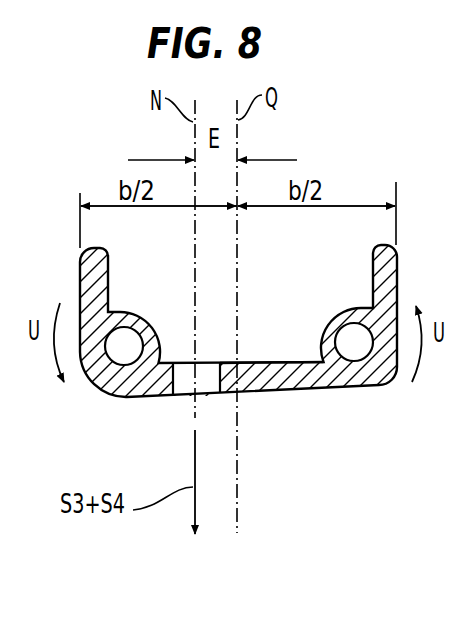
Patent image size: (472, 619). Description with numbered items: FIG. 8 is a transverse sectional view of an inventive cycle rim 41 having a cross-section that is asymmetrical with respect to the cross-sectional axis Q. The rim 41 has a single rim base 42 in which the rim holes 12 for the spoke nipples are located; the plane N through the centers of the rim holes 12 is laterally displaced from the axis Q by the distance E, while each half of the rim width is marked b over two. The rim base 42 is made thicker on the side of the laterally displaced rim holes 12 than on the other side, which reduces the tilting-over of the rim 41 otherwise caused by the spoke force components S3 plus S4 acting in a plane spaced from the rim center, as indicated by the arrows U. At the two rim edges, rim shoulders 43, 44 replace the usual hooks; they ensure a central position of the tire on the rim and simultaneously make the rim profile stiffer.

The rim 41 is at (90, 178).
The rim base 42 is at (238, 383).
The rim shoulder 43 is at (130, 312).
The rim shoulder 44 is at (347, 309).
The rim hole 12 is at (190, 380).